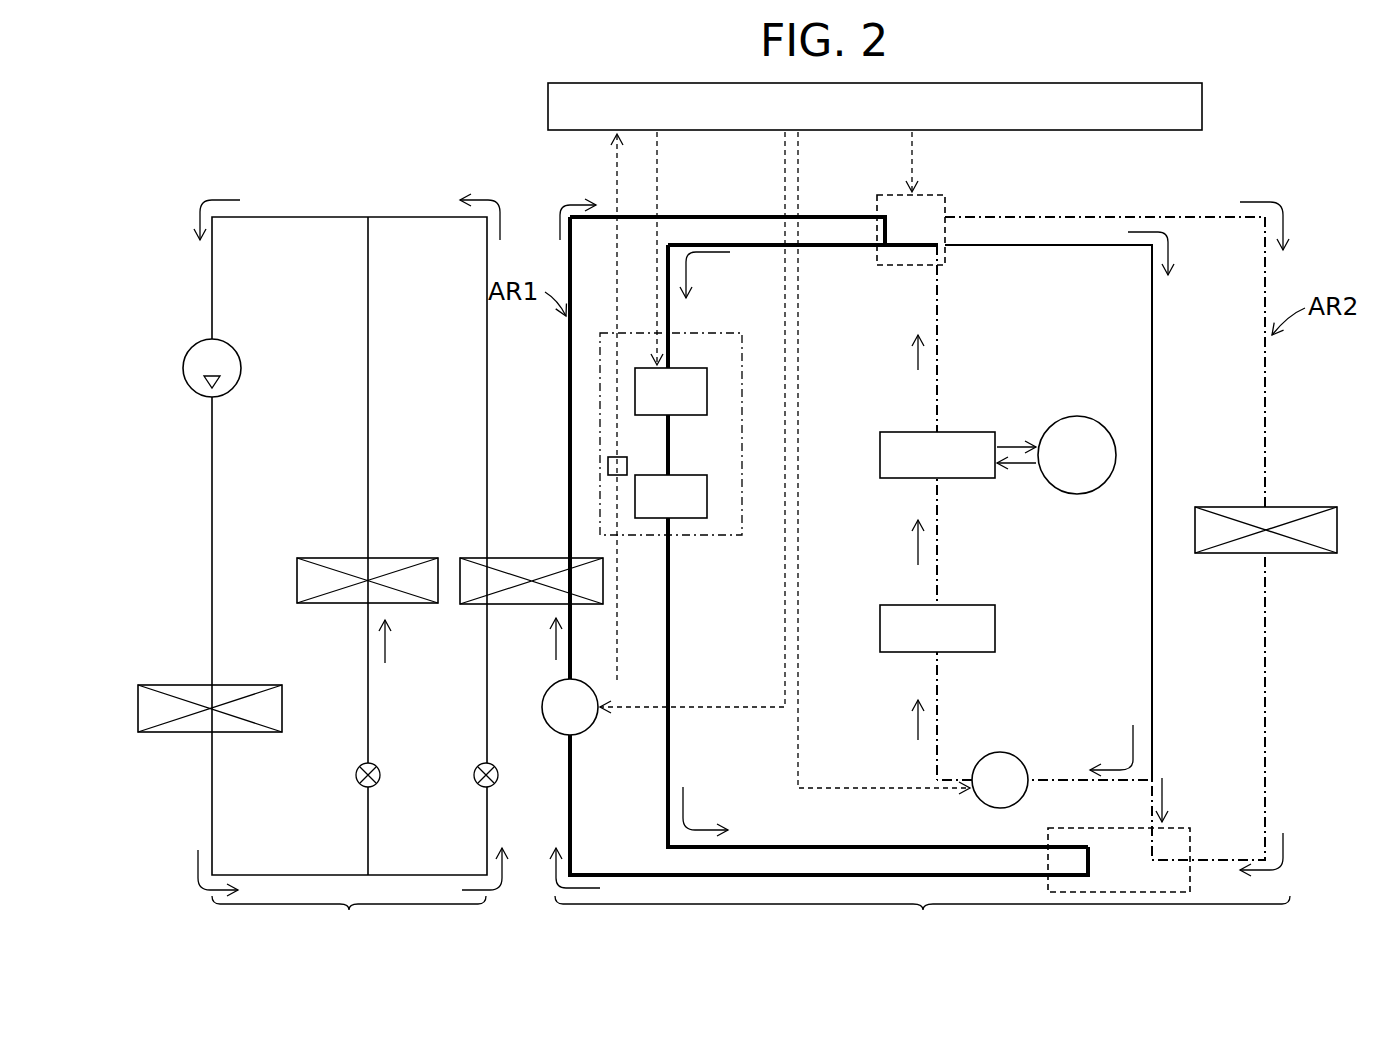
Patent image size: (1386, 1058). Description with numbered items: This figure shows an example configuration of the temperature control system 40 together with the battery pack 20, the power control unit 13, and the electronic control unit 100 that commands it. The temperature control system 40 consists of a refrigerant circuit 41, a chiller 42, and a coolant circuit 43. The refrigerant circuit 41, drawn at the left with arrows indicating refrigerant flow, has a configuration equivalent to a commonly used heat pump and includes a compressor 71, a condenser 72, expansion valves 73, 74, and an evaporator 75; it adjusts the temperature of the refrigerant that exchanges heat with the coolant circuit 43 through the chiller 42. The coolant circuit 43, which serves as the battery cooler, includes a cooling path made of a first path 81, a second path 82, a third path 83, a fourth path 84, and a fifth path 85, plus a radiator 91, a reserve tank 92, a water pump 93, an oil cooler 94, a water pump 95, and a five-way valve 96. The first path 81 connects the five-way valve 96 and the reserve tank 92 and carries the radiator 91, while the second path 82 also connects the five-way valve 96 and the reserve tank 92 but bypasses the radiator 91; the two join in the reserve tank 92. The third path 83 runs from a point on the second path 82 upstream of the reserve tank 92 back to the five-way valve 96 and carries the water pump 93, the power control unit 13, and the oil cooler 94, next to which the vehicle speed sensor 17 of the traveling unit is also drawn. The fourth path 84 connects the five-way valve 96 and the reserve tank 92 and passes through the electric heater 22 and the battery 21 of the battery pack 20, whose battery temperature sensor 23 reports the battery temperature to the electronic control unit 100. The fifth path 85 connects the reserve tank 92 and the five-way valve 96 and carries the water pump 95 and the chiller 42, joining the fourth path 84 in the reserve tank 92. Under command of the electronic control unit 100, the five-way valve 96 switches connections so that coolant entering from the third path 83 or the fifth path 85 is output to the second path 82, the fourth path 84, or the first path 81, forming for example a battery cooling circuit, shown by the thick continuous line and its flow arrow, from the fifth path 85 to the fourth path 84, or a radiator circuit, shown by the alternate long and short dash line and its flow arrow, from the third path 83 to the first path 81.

The electronic control unit 100 is at (1203, 103).
The temperature control system 40 is at (212, 152).
The refrigerant circuit 41 is at (349, 919).
The coolant circuit 43 is at (922, 919).
The chiller 42 is at (525, 558).
The compressor 71 is at (232, 348).
The condenser 72 is at (250, 685).
The expansion valve 73 is at (377, 766).
The expansion valve 74 is at (495, 766).
The evaporator 75 is at (408, 558).
The fifth path 85 is at (744, 217).
The fourth path 84 is at (744, 247).
The first path 81 is at (1048, 217).
The second path 82 is at (1050, 247).
The third path 83 is at (942, 285).
The five-way valve 96 is at (932, 197).
The reserve tank 92 is at (1178, 827).
The radiator 91 is at (1300, 507).
The water pump 93 is at (1020, 760).
The oil cooler 94 is at (972, 430).
The water pump 95 is at (590, 688).
The power control unit 13 is at (975, 605).
The vehicle speed sensor 17 is at (1098, 424).
The battery pack 20 is at (708, 335).
The battery 21 is at (686, 475).
The electric heater 22 is at (686, 368).
The battery temperature sensor 23 is at (614, 455).